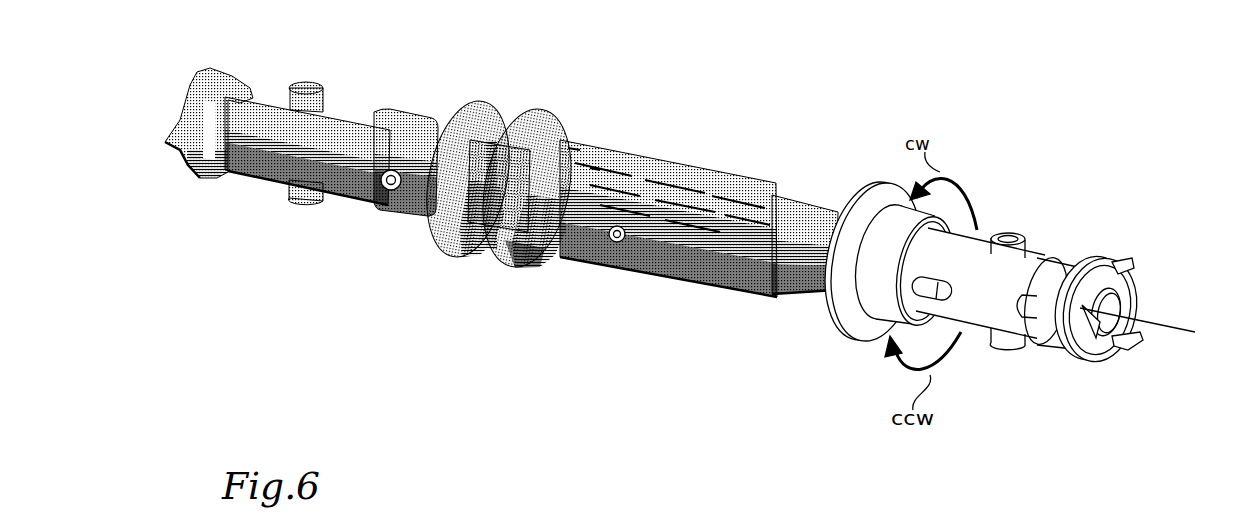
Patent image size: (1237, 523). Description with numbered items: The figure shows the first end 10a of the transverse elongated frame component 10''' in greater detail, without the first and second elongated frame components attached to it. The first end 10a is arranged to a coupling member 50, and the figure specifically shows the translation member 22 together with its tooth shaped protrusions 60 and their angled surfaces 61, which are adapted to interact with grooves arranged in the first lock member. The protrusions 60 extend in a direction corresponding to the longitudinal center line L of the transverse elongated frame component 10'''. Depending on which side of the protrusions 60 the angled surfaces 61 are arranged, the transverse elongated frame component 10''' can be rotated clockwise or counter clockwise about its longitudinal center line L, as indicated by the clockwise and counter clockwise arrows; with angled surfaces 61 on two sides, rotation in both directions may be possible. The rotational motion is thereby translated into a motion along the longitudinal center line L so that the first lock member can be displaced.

The transverse elongated frame component 10''' is at (977, 264).
The first end 10a is at (1045, 262).
The translation member 22 is at (1125, 288).
The coupling member 50 is at (1050, 323).
The tooth shaped protrusions 60 is at (1135, 320).
The angled surface 61 is at (1133, 343).
The longitudinal center line L is at (1175, 332).